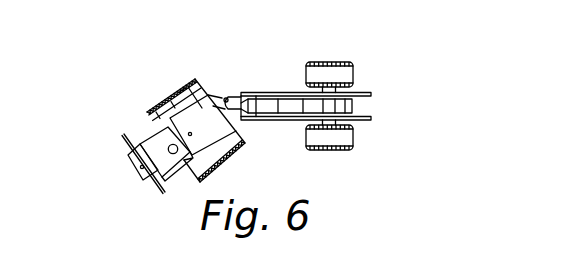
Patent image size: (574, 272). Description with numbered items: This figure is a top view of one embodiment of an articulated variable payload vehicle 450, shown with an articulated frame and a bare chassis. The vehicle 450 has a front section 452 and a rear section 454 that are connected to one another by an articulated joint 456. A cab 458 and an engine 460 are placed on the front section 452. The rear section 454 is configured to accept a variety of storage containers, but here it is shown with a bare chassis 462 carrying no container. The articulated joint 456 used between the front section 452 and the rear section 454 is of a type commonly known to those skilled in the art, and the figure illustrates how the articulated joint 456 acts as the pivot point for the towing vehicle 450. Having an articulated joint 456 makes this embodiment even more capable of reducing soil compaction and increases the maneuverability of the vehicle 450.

The articulated variable payload vehicle 450 is at (125, 100).
The front section 452 is at (165, 92).
The rear section 454 is at (273, 57).
The articulated joint 456 is at (228, 96).
The cab 458 is at (182, 80).
The engine 460 is at (157, 157).
The bare chassis 462 is at (365, 112).